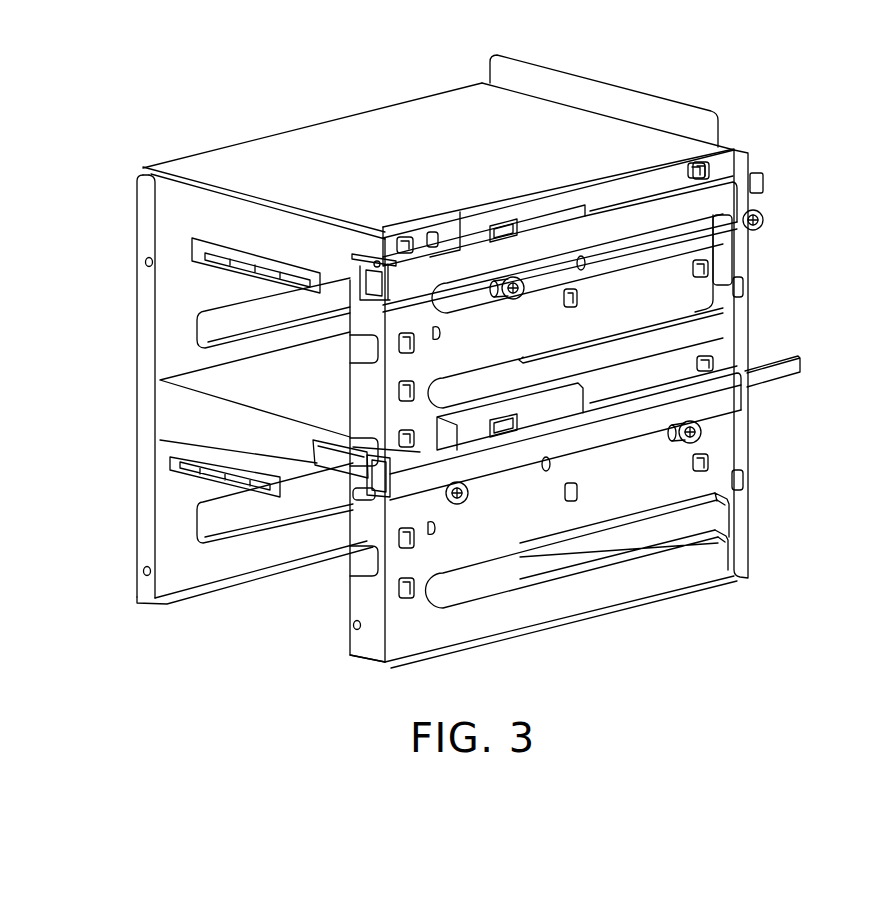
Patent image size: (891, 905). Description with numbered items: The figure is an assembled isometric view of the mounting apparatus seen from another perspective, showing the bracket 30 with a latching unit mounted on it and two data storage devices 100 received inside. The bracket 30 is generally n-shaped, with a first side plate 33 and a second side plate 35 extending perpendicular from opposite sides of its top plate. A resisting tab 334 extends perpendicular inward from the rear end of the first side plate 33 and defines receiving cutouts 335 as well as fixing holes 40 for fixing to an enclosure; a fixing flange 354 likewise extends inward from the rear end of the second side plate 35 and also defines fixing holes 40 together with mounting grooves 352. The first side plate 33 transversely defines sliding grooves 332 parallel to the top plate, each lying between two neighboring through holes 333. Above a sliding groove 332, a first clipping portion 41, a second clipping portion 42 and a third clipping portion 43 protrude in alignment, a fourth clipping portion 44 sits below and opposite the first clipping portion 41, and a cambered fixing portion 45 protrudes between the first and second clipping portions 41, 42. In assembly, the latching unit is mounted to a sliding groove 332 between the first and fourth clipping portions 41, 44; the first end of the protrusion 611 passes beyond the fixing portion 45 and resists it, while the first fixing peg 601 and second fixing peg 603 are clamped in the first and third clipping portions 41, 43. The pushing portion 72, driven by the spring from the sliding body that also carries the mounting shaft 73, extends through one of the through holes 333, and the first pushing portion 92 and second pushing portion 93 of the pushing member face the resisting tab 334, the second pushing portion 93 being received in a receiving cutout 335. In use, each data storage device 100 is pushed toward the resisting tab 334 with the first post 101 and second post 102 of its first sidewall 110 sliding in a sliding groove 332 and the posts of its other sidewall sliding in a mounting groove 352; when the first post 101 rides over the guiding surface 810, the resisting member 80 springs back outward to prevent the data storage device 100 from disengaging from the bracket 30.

The bracket 30 is at (360, 123).
The first side plate 33 is at (637, 500).
The second side plate 35 is at (170, 575).
The fixing holes 40 is at (143, 571).
The first clipping portion 41 is at (412, 230).
The second clipping portion 42 is at (578, 497).
The third clipping portion 43 is at (712, 166).
The fourth clipping portion 44 is at (415, 598).
The fixing portion 45 is at (413, 230).
The pushing portion 72 is at (768, 183).
The mounting shaft 73 is at (377, 253).
The resisting member 80 is at (484, 278).
The first pushing portion 92 is at (363, 495).
The second pushing portion 93 is at (327, 460).
The data storage device 100 is at (195, 215).
The first post 101 is at (500, 316).
The second post 102 is at (765, 222).
The first sidewall 110 is at (693, 240).
The sliding grooves 332 is at (715, 327).
The through holes 333 is at (745, 481).
The resisting tab 334 is at (367, 652).
The receiving cutouts 335 is at (362, 560).
The mounting grooves 352 is at (210, 522).
The fixing flange 354 is at (145, 207).
The first fixing peg 601 is at (438, 338).
The second fixing peg 603 is at (690, 172).
The protrusion 611 is at (517, 207).
The guiding surface 810 is at (495, 301).